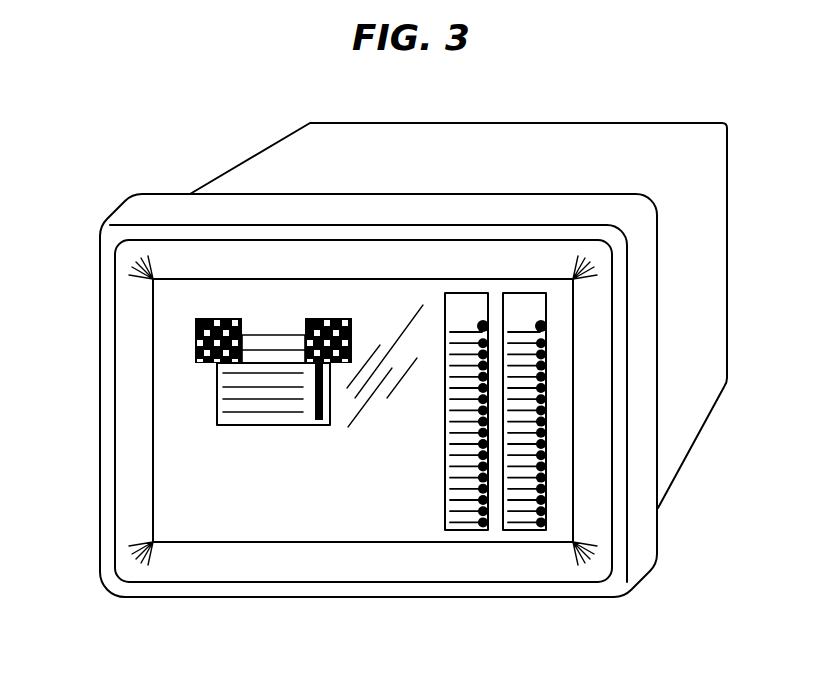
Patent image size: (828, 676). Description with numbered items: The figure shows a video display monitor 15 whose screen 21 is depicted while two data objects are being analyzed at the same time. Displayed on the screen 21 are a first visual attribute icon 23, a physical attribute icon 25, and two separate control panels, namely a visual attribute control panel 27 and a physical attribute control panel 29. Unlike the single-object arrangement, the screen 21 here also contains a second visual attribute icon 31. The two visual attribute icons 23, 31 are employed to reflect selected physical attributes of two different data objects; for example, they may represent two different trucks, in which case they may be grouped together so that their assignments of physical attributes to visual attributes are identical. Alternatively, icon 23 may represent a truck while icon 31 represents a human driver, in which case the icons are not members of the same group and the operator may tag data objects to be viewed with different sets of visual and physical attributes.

The video display monitor 15 is at (74, 438).
The screen 21 is at (398, 278).
The visual attribute icon 23 is at (210, 318).
The physical attribute icon 25 is at (303, 425).
The visual attribute control panel 27 is at (470, 293).
The physical attribute control panel 29 is at (528, 302).
The second visual attribute icon 31 is at (323, 318).